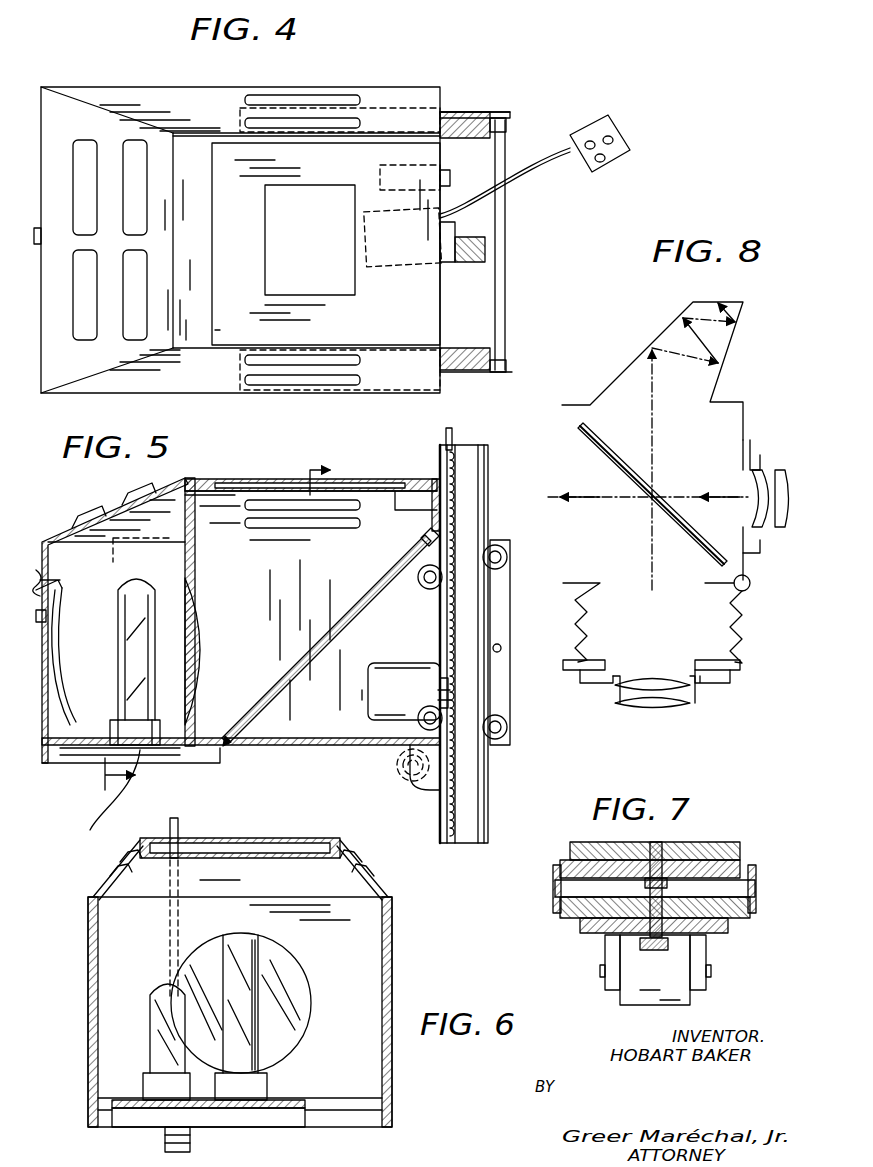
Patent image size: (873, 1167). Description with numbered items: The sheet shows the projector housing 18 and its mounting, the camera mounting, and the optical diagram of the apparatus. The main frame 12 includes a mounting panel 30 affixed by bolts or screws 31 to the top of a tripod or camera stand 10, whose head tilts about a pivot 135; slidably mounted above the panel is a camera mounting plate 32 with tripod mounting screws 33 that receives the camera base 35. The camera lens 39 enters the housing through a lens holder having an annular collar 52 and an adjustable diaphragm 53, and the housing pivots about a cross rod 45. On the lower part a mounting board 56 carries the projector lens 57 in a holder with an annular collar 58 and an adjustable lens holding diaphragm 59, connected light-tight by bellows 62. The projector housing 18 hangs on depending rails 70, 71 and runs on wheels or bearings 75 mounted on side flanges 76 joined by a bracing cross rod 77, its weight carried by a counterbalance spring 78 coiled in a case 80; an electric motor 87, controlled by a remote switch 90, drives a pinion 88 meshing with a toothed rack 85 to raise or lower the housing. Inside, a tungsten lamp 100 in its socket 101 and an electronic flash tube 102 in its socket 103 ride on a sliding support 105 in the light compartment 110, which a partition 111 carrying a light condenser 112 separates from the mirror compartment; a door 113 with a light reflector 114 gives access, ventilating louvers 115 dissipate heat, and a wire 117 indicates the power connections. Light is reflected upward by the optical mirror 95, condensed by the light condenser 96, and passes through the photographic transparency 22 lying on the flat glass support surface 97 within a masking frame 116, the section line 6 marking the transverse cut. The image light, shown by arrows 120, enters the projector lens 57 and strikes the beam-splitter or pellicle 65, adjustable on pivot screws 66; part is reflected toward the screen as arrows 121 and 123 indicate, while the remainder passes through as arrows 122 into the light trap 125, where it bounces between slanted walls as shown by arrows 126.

In FIG. 5, the section line 6- 6 is at (224, 622).
In FIG. 7, the tripod or camera stand 10 is at (615, 1012).
In FIG. 7, the main frame 12 is at (553, 890).
In FIG. 4, the projector housing 18 is at (425, 95).
In FIG. 5, the projector housing 18 is at (191, 620).
In FIG. 6, the projector housing 18 is at (393, 950).
In FIG. 4, the photographic transparency 22 is at (322, 259).
In FIG. 5, the photographic transparency 22 is at (300, 478).
In FIG. 6, the photographic transparency 22 is at (288, 836).
In FIG. 7, the mounting panel 30 is at (585, 915).
In FIG. 7, the bolts or screws 31 is at (650, 950).
In FIG. 7, the camera mounting plate 32 is at (720, 870).
In FIG. 7, the tripod mounting screws 33 is at (660, 846).
In FIG. 7, the camera base 35 is at (725, 842).
In FIG. 8, the camera lens 39 is at (772, 470).
In FIG. 8, the cross rod 45 is at (751, 583).
In FIG. 8, the annular collar 52 is at (752, 440).
In FIG. 8, the adjustable diaphragm 53 is at (762, 450).
In FIG. 8, the mounting board 56 is at (740, 665).
In FIG. 8, the projector lens 57 is at (690, 703).
In FIG. 8, the annular collar 58 is at (730, 682).
In FIG. 8, the adjustable lens holding diaphragm 59 is at (700, 685).
In FIG. 8, the bellows 62 is at (742, 620).
In FIG. 8, the beam-splitter or pellicle 65 is at (585, 432).
In FIG. 8, the adjustable pivot screws 66 is at (650, 502).
In FIG. 4, the depending rail 70 is at (470, 128).
In FIG. 5, the depending rail 70 is at (489, 452).
In FIG. 4, the depending rail 71 is at (490, 358).
In FIG. 4, the wheels or bearings 75 is at (508, 124).
In FIG. 5, the wheels or bearings 75 is at (505, 555).
In FIG. 4, the side flanges 76 is at (455, 112).
In FIG. 5, the side flanges 76 is at (510, 685).
In FIG. 4, the bracing cross rod 77 is at (507, 142).
In FIG. 5, the bracing cross rod 77 is at (502, 647).
In FIG. 4, the counterbalance spring 78 is at (452, 178).
In FIG. 5, the counterbalance spring 78 is at (453, 438).
In FIG. 6, the counterbalance spring 78 is at (180, 824).
In FIG. 4, the spring case 80 is at (380, 168).
In FIG. 5, the spring case 80 is at (428, 790).
In FIG. 6, the spring case 80 is at (190, 1143).
In FIG. 4, the toothed rack 85 is at (486, 248).
In FIG. 5, the toothed rack 85 is at (462, 522).
In FIG. 4, the electric motor 87 is at (395, 272).
In FIG. 5, the electric motor 87 is at (368, 672).
In FIG. 4, the pinion 88 is at (450, 262).
In FIG. 5, the pinion 88 is at (440, 680).
In FIG. 4, the remote switch 90 is at (610, 130).
In FIG. 5, the optical mirror 95 is at (375, 595).
In FIG. 5, the light condenser 96 is at (365, 484).
In FIG. 6, the light condenser 96 is at (250, 838).
In FIG. 5, the flat glass support surface 97 is at (350, 480).
In FIG. 6, the flat glass support surface 97 is at (222, 838).
In FIG. 6, the tungsten filament projector lamp 100 is at (155, 985).
In FIG. 6, the lamp socket 101 is at (143, 1082).
In FIG. 5, the electronic flash tube 102 is at (138, 588).
In FIG. 6, the electronic flash tube 102 is at (260, 1013).
In FIG. 6, the flash tube socket 103 is at (267, 1085).
In FIG. 5, the sliding support 105 is at (95, 752).
In FIG. 6, the sliding support 105 is at (300, 1112).
In FIG. 5, the light compartment 110 is at (98, 655).
In FIG. 5, the partition 111 is at (196, 570).
In FIG. 6, the partition 111 is at (358, 1039).
In FIG. 5, the light condenser 112 is at (212, 652).
In FIG. 6, the light condenser 112 is at (280, 975).
In FIG. 5, the door 113 is at (52, 595).
In FIG. 5, the light reflector 114 is at (66, 688).
In FIG. 4, the ventilating louvers 115 is at (360, 123).
In FIG. 5, the ventilating louvers 115 is at (360, 523).
In FIG. 6, the ventilating louvers 115 is at (380, 875).
In FIG. 4, the frame flange 116 is at (276, 324).
In FIG. 5, the frame flange 116 is at (395, 482).
In FIG. 6, the frame flange 116 is at (335, 836).
In FIG. 5, the wire 117 is at (90, 828).
In FIG. 8, the projection image light arrows 120 is at (654, 580).
In FIG. 8, the reflected light arrows 121 is at (570, 494).
In FIG. 8, the transmitted light arrows 122 is at (654, 380).
In FIG. 8, the light path 123 is at (705, 494).
In FIG. 8, the light trap 125 is at (690, 300).
In FIG. 8, the light trap reflection arrows 126 is at (725, 335).
In FIG. 7, the pivot 135 is at (706, 970).